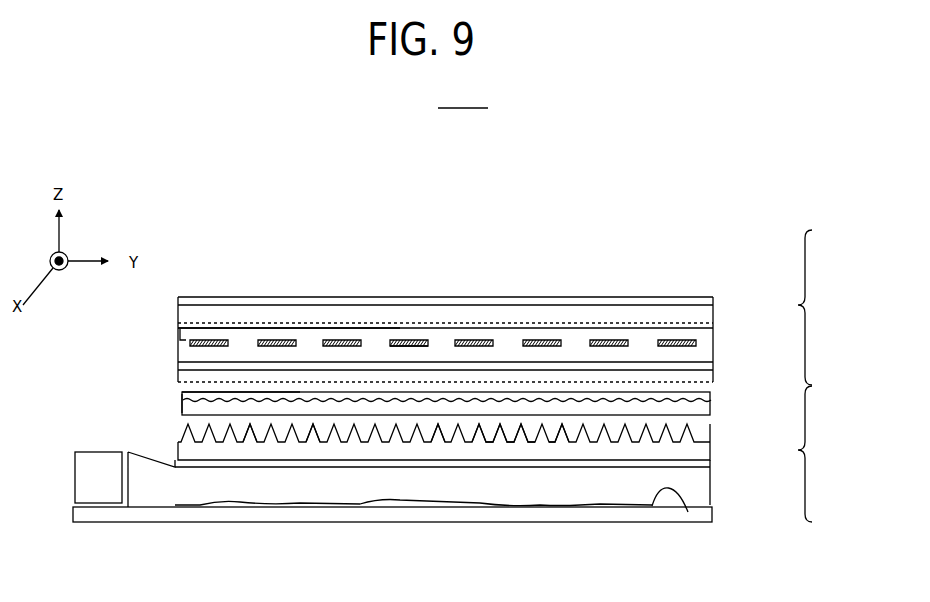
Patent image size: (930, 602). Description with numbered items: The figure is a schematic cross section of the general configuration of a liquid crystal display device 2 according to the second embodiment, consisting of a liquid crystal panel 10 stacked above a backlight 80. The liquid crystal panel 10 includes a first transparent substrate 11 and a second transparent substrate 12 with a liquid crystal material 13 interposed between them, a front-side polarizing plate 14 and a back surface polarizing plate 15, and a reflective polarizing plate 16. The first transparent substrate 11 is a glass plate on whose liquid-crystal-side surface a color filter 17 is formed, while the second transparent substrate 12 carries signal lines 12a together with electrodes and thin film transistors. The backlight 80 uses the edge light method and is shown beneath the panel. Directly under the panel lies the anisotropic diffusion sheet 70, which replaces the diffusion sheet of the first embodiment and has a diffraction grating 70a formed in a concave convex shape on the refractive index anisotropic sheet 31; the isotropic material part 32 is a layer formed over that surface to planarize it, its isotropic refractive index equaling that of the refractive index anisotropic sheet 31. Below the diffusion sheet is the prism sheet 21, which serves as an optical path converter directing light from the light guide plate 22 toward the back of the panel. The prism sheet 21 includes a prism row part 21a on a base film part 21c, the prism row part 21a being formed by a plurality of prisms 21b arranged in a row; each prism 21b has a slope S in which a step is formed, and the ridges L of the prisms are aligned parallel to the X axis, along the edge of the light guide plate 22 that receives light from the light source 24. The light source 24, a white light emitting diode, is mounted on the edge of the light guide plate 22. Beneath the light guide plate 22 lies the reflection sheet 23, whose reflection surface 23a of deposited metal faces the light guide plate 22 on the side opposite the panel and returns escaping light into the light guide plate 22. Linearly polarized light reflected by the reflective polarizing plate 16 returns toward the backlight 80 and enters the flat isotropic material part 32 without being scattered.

The liquid crystal display device 2 is at (463, 140).
The liquid crystal panel 10 is at (819, 307).
The front-side polarizing plate 14 is at (484, 282).
The first transparent substrate 11 is at (484, 308).
The second transparent substrate 12 is at (484, 334).
The signal lines 12a is at (443, 298).
The color filter 17 is at (292, 286).
The liquid crystal material 13 is at (426, 295).
The back surface polarizing plate 15 is at (484, 352).
The reflective polarizing plate 16 is at (484, 367).
The backlight 80 is at (817, 454).
The anisotropic diffusion sheet 70 is at (483, 400).
The diffraction grating 70a is at (205, 391).
The isotropic material part 32 is at (240, 398).
The refractive index anisotropic sheet 31 is at (146, 414).
The prism sheet 21 is at (482, 437).
The prism row part 21a is at (351, 464).
The prism 21b is at (253, 443).
The base film part 21c is at (580, 482).
The slope S is at (440, 447).
The ridge L is at (482, 427).
The light guide plate 22 is at (457, 479).
The light source 24 is at (94, 453).
The reflection sheet 23 is at (429, 511).
The reflection surface 23a is at (688, 512).